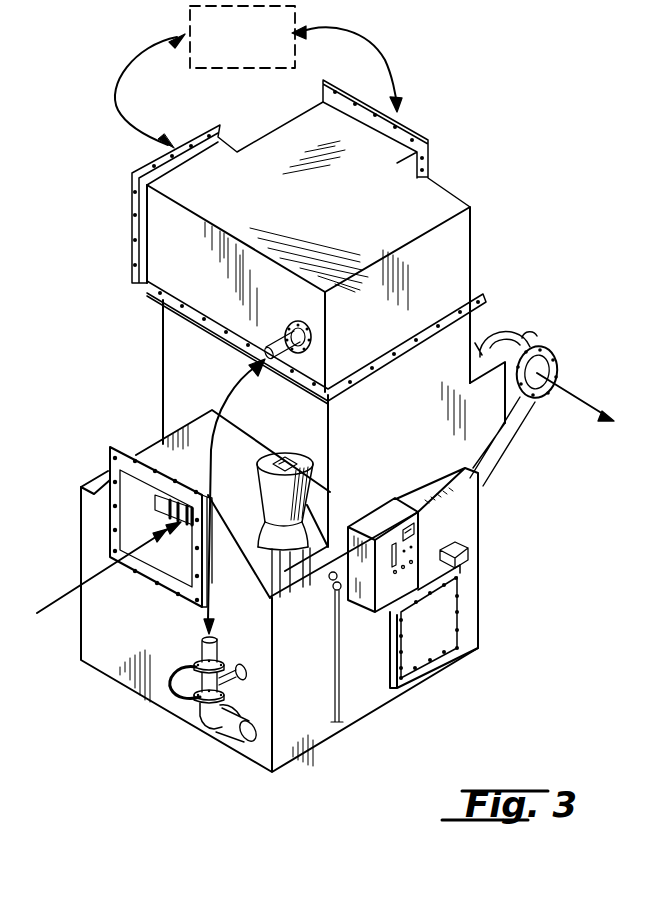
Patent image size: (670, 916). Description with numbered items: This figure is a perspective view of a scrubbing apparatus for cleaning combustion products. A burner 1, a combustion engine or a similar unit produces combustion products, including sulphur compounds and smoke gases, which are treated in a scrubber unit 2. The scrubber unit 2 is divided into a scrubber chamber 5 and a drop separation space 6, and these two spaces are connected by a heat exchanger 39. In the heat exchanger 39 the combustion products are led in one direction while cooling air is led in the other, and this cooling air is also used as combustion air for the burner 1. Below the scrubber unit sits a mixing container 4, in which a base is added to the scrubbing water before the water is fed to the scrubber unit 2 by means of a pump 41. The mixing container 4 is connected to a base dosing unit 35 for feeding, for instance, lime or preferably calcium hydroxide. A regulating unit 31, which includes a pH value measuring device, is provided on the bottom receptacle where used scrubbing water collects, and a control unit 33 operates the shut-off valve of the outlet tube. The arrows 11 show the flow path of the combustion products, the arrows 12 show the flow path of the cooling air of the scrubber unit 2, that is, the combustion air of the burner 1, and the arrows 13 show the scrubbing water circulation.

The burner 1 is at (248, 52).
The scrubber unit 2 is at (401, 431).
The mixing container 4 is at (313, 664).
The scrubber chamber 5 is at (163, 240).
The drop separation space 6 is at (480, 355).
The arrows showing flow path of combustion products 11 is at (114, 97).
The arrows showing flow path of cooling air 12 is at (386, 62).
The arrows showing scrubbing water circulation 13 is at (233, 387).
The regulating unit 31 is at (414, 533).
The control unit 33 is at (418, 575).
The base dosing unit 35 is at (289, 457).
The heat exchanger 39 is at (200, 521).
The pump 41 is at (204, 728).